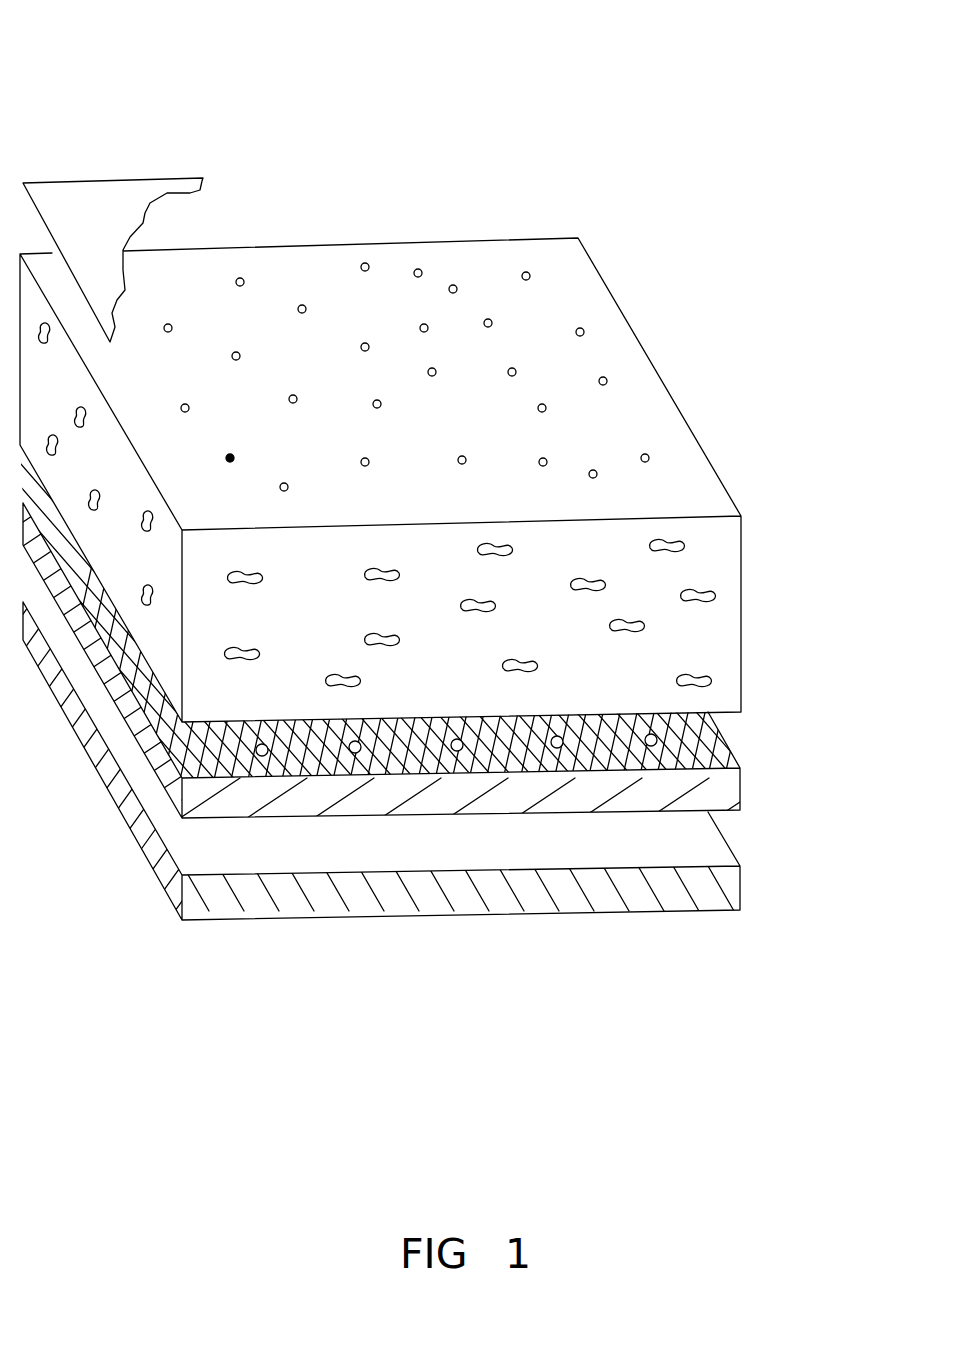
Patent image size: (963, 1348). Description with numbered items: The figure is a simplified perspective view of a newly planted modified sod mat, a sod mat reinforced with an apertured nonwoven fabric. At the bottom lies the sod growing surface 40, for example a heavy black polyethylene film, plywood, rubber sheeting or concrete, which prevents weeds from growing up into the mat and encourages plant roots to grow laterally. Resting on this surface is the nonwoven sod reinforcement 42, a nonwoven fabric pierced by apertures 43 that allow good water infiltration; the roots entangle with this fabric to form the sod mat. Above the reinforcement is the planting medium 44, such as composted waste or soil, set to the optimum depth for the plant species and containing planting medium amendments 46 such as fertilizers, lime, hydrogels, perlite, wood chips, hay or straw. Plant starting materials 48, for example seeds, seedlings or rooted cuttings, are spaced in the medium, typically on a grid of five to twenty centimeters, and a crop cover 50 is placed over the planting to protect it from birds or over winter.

The sod growing surface 40 is at (617, 912).
The nonwoven sod reinforcement 42 is at (741, 785).
The apertures 43 is at (352, 757).
The planting medium 44 is at (742, 638).
The planting medium amendments 46 is at (673, 538).
The plant starting materials 48 is at (526, 273).
The crop cover 50 is at (110, 182).